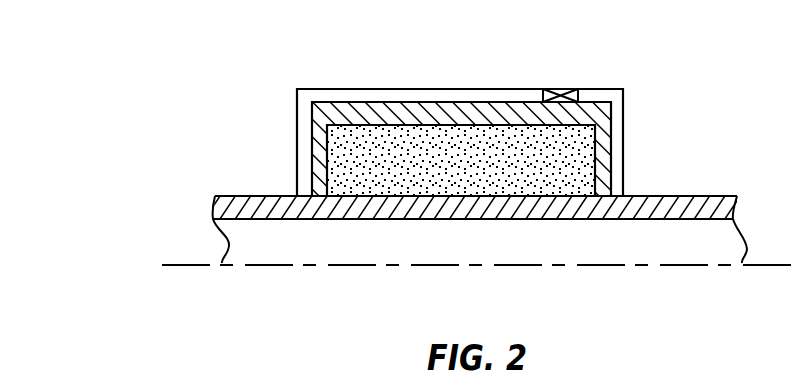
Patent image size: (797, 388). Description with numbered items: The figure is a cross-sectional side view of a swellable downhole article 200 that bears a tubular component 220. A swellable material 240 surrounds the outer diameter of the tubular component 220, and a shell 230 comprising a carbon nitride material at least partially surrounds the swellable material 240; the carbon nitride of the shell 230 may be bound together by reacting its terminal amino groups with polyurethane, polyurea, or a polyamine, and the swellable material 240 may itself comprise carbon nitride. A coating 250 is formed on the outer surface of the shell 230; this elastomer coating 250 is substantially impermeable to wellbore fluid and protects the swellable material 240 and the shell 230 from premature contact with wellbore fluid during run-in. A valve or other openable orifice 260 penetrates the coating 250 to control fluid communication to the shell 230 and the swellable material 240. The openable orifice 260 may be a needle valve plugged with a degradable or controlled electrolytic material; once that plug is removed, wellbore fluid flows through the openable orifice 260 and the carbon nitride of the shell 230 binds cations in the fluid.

The swellable downhole article 200 is at (162, 118).
The tubular component 220 is at (680, 196).
The shell 230 is at (438, 112).
The swellable material 240 is at (373, 142).
The coating 250 is at (305, 180).
The openable orifice 260 is at (565, 90).